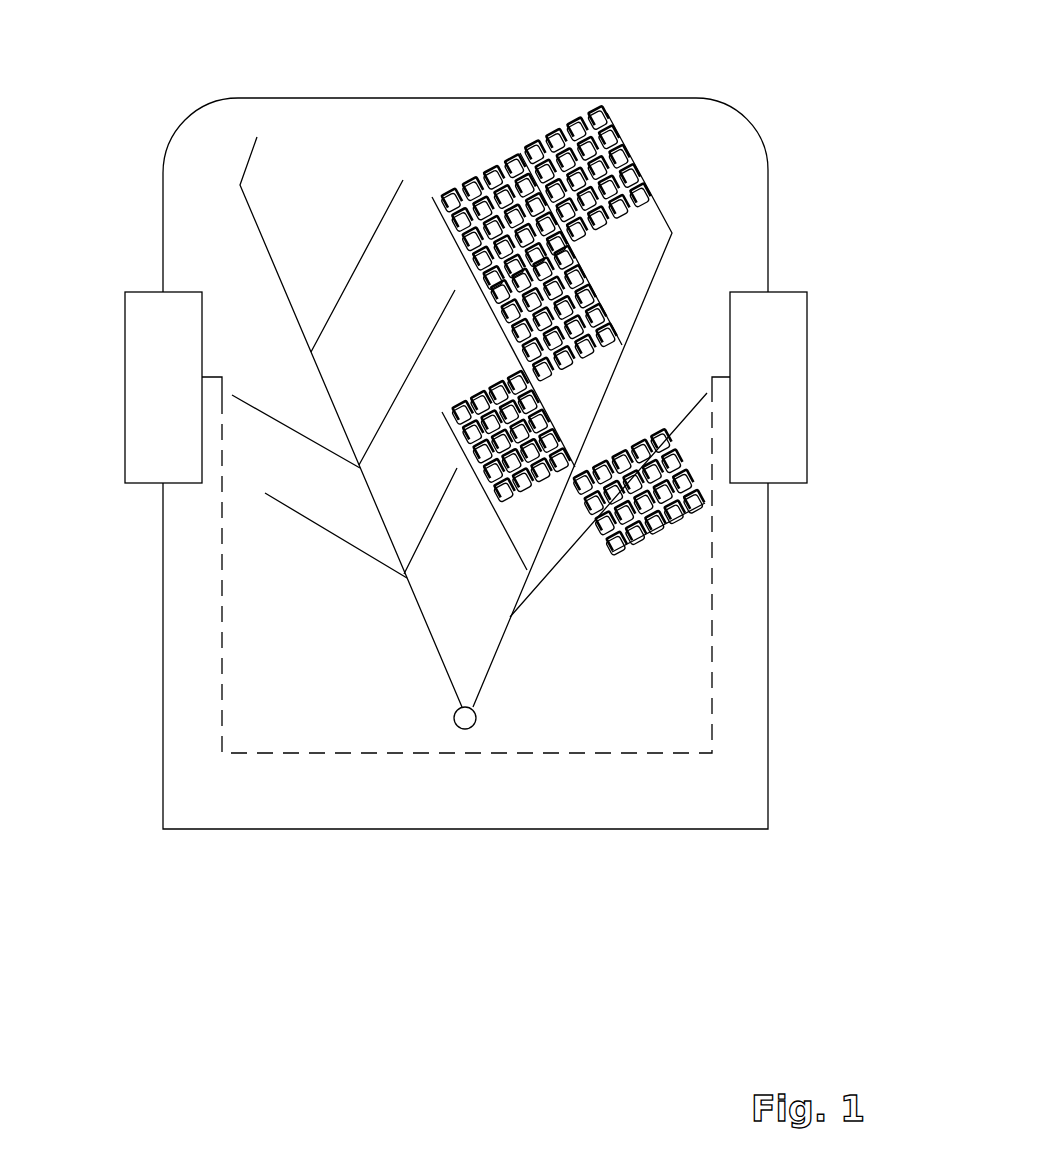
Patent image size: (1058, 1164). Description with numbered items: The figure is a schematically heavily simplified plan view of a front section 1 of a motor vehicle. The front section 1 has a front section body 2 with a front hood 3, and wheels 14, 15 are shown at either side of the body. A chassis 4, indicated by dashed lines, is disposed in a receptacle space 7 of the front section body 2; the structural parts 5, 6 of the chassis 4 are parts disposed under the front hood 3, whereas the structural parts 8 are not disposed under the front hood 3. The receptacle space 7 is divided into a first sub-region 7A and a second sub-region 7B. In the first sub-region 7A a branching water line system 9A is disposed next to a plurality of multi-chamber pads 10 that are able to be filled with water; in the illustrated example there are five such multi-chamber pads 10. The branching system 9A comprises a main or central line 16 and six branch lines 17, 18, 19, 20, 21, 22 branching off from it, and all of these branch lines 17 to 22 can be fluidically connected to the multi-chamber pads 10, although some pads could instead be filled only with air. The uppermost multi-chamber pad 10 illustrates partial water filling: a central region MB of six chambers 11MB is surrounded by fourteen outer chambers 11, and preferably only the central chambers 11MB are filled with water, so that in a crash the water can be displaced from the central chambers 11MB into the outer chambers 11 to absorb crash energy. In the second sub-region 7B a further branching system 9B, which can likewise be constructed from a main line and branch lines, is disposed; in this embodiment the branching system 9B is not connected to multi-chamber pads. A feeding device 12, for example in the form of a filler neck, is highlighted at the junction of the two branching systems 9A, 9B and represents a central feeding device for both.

The front section 1 is at (809, 496).
The front section body 2 is at (778, 663).
The front hood 3 is at (730, 220).
The chassis 4 is at (472, 773).
The structural part of the chassis 5 is at (220, 518).
The structural part of the chassis 6 is at (713, 517).
The receptacle space 7 is at (318, 643).
The first sub-region 7A is at (569, 115).
The second sub-region 7B is at (321, 150).
The structural parts not disposed under the front hood 8 is at (418, 753).
The branching water line system 9A is at (545, 628).
The branching water line system 9B is at (397, 634).
The multi-chamber pad 10 is at (643, 138).
The outer chambers 11 is at (537, 160).
The central chambers 11MB is at (597, 177).
The central region MB is at (626, 177).
The feeding device 12 is at (477, 723).
The wheel 14 is at (151, 400).
The wheel 15 is at (775, 338).
The main line 16 is at (493, 663).
The branch line 17 is at (612, 560).
The branch line 18 is at (500, 530).
The branch line 19 is at (673, 415).
The branch line 20 is at (508, 327).
The branch line 21 is at (600, 277).
The branch line 22 is at (622, 138).